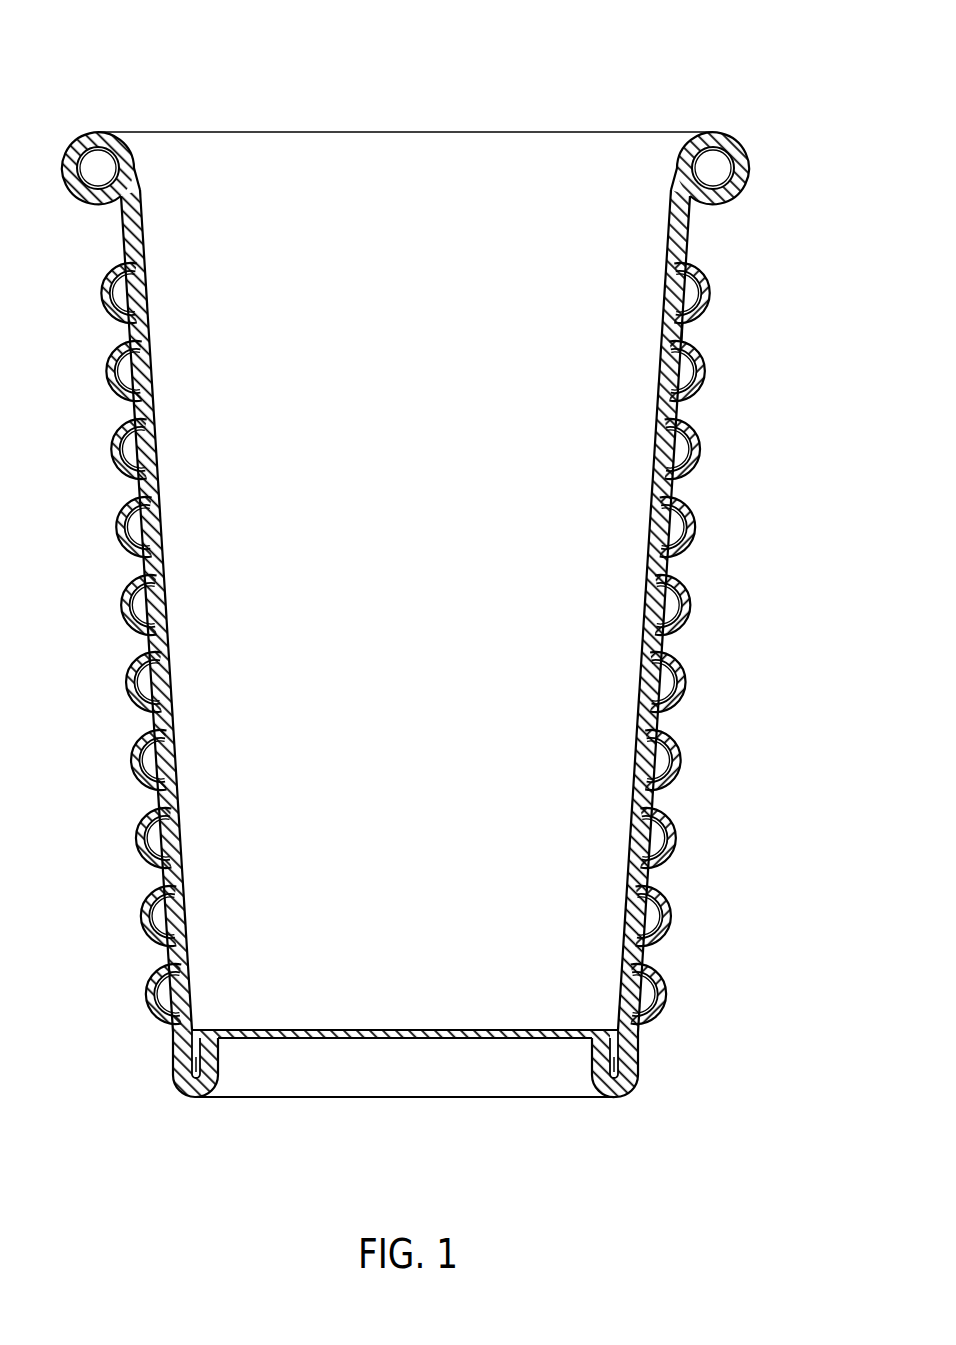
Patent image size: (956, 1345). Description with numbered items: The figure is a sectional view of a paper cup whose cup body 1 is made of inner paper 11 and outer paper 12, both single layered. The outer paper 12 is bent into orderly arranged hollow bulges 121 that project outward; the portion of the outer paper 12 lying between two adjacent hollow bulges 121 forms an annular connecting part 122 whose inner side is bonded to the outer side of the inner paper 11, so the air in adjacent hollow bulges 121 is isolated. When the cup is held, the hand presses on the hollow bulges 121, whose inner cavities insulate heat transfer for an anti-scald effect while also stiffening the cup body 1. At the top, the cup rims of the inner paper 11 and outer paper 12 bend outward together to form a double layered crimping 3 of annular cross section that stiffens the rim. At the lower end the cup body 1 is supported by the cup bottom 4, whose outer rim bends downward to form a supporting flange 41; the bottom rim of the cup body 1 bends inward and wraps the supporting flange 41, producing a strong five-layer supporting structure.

The cup body 1 is at (438, 598).
The crimping 3 is at (66, 160).
The cup bottom 4 is at (388, 1113).
The supporting flange 41 is at (197, 1088).
The inner paper 11 is at (652, 610).
The outer paper 12 is at (470, 603).
The hollow bulge 121 is at (697, 455).
The connecting part 122 is at (680, 332).